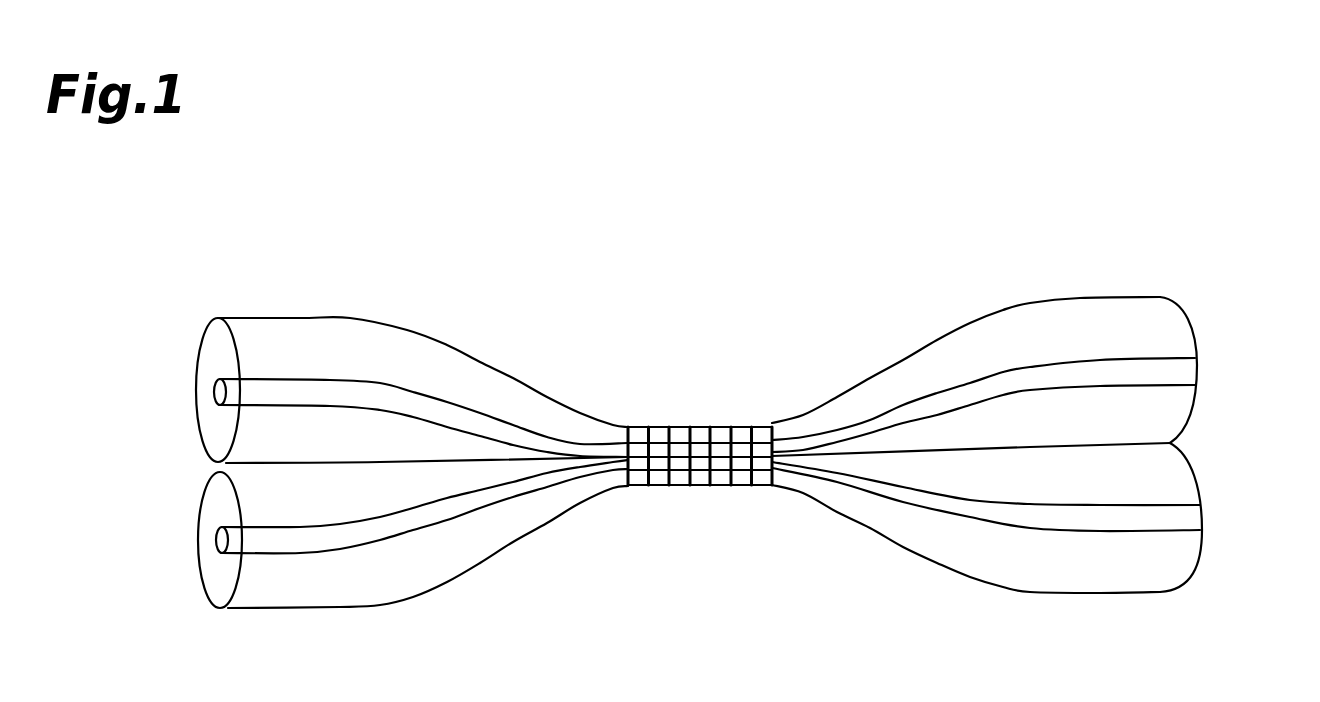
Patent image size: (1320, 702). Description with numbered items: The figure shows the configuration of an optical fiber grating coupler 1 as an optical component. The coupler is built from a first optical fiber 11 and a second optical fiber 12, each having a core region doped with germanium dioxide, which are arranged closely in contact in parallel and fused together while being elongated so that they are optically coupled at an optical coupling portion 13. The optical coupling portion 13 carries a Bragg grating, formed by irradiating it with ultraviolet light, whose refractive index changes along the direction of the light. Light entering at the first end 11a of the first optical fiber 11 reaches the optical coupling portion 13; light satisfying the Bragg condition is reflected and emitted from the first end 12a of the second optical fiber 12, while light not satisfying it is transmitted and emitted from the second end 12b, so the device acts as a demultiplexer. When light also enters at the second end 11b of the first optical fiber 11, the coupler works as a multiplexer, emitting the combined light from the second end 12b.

The optical fiber grating coupler 1 is at (801, 232).
The first optical fiber 11 is at (362, 317).
The first end of the first optical fiber 11a is at (197, 418).
The second end of the first optical fiber 11b is at (1198, 393).
The second optical fiber 12 is at (432, 590).
The first end of the second optical fiber 12a is at (197, 572).
The second end of the second optical fiber 12b is at (1202, 543).
The optical coupling portion 13 is at (773, 497).